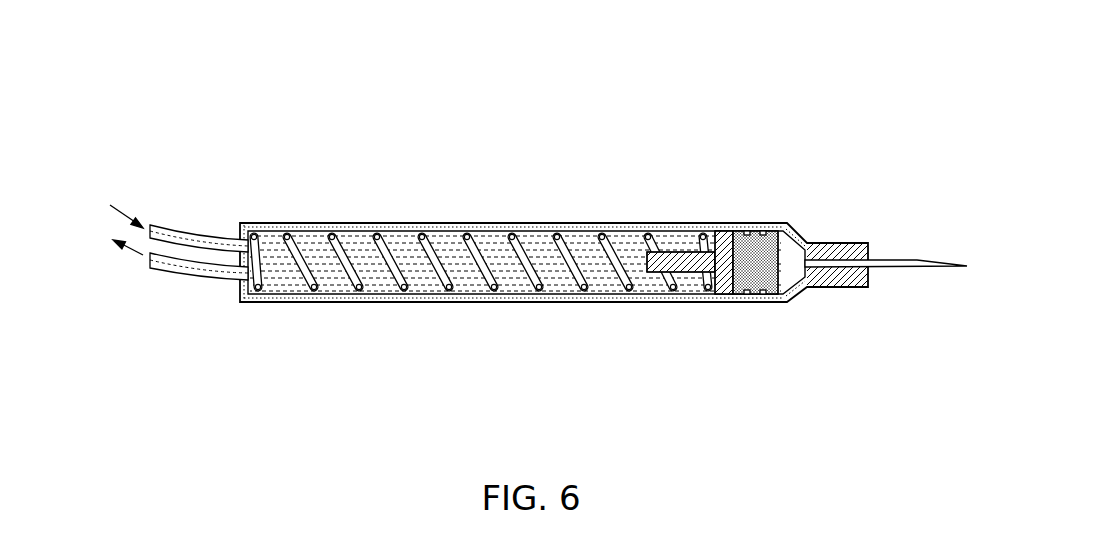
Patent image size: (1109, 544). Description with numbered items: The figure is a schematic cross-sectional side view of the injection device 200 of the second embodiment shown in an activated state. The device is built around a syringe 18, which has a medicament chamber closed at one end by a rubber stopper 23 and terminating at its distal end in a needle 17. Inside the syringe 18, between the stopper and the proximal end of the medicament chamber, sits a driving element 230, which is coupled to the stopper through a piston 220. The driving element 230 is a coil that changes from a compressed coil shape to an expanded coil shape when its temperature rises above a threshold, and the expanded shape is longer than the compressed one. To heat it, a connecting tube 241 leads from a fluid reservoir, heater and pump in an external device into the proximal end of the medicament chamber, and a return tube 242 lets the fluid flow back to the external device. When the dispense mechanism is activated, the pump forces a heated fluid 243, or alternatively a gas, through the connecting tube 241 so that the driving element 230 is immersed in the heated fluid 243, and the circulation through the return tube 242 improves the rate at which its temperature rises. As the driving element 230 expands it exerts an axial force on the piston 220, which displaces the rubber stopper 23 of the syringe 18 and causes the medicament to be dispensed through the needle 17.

The injection device 200 is at (590, 135).
The syringe 18 is at (647, 297).
The heated fluid 243 is at (357, 238).
The driving element 230 is at (468, 238).
The piston 220 is at (717, 258).
The rubber stopper 23 is at (755, 253).
The needle 17 is at (893, 255).
The connecting tube 241 is at (202, 245).
The return tube 242 is at (192, 272).